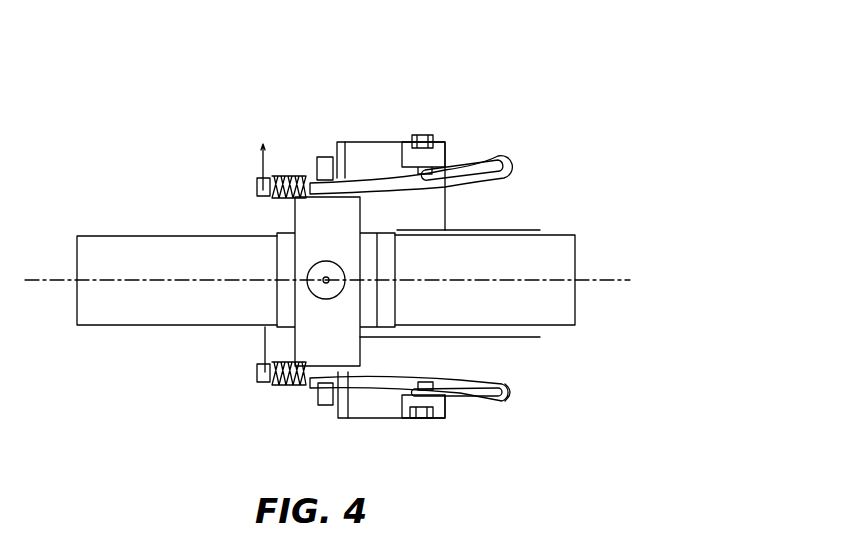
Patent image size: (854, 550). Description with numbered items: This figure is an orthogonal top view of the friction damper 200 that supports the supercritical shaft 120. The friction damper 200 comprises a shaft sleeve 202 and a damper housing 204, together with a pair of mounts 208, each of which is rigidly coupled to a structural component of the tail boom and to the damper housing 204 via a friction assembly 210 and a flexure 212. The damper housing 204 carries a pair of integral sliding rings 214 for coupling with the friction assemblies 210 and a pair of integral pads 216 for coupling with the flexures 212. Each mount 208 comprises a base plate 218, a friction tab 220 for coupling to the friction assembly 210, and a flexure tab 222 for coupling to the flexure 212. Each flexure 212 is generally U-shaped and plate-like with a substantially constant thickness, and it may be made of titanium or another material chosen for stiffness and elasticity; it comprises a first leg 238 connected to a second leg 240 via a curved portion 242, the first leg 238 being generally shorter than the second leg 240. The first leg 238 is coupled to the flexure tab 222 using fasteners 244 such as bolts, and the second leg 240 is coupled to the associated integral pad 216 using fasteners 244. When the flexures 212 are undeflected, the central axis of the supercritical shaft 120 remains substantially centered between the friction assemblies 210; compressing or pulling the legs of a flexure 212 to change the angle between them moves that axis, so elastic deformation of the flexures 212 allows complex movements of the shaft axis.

The supercritical shaft 120 is at (540, 235).
The friction damper 200 is at (490, 90).
The shaft sleeve 202 is at (277, 255).
The damper housing 204 is at (293, 222).
The mount 208 is at (365, 142).
The friction assembly 210 is at (308, 148).
The flexure 212 is at (510, 162).
The integral sliding ring 214 is at (327, 157).
The integral pad 216 is at (258, 195).
The base plate 218 is at (415, 208).
The friction tab 220 is at (342, 160).
The flexure tab 222 is at (436, 150).
The first leg 238 is at (468, 162).
The second leg 240 is at (325, 172).
The curved portion 242 is at (512, 393).
The fastener 244 is at (373, 188).